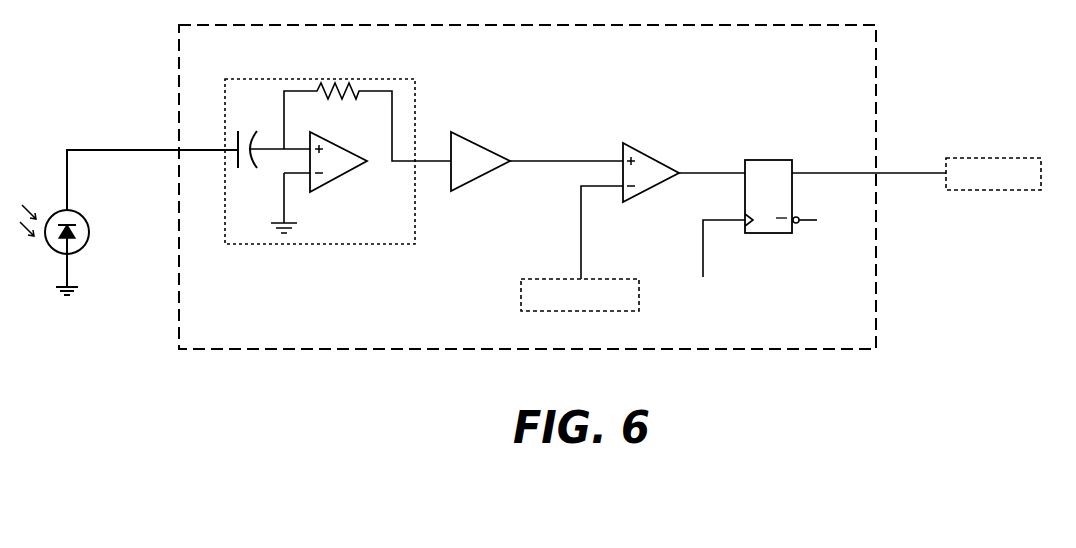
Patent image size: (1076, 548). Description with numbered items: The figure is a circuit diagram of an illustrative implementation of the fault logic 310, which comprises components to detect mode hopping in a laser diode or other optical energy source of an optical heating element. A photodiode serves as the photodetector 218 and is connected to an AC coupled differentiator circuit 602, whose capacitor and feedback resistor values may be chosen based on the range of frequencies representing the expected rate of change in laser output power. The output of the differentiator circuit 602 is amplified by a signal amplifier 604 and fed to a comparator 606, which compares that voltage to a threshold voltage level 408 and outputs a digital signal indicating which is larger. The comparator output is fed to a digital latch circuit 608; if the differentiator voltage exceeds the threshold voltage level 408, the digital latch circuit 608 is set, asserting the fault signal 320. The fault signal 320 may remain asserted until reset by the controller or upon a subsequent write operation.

The photodetector 218 is at (77, 223).
The fault logic 310 is at (369, 342).
The fault signal 320 is at (993, 160).
The threshold voltage level 408 is at (620, 281).
The AC coupled differentiator circuit 602 is at (242, 87).
The signal amplifier 604 is at (470, 150).
The comparator 606 is at (645, 160).
The digital latch circuit 608 is at (768, 168).